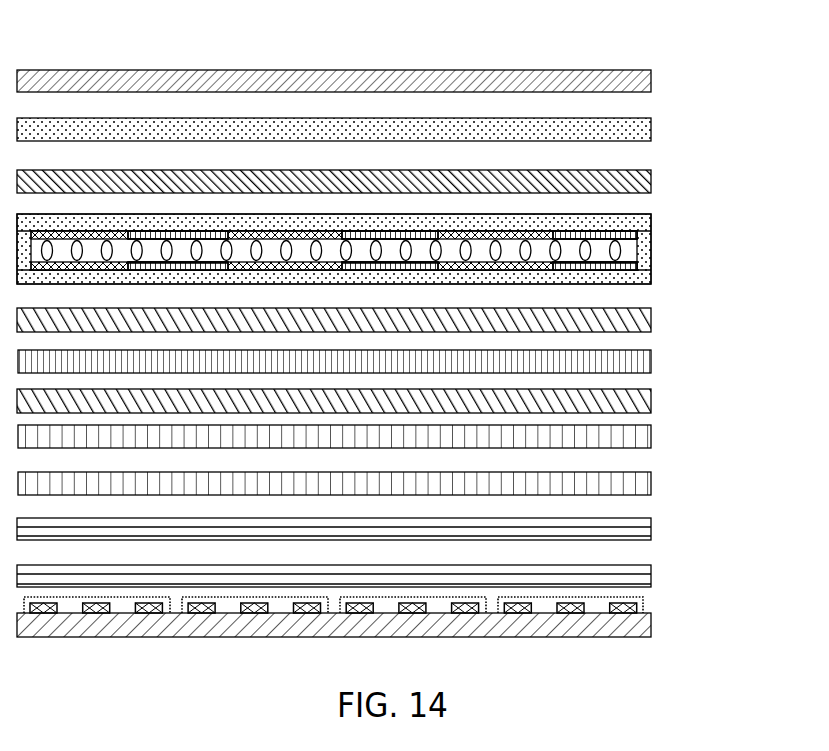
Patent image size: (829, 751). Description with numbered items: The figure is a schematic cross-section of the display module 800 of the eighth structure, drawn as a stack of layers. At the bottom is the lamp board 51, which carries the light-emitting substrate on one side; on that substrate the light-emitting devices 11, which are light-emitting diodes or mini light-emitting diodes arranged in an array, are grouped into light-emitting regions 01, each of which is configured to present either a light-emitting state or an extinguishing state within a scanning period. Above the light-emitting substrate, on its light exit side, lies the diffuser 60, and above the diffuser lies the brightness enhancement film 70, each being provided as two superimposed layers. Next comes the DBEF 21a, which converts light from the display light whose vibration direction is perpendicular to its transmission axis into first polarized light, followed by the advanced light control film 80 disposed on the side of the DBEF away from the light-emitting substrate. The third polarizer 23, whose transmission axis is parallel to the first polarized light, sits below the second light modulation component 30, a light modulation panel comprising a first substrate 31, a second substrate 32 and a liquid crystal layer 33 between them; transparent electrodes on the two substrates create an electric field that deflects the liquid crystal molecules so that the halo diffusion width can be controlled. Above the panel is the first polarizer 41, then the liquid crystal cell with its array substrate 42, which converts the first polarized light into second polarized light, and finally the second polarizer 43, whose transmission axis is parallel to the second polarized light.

The display module 800 is at (82, 50).
The second polarizer 43 is at (643, 87).
The array substrate 42 is at (643, 137).
The first polarizer 41 is at (643, 187).
The second light modulation component 30 is at (384, 250).
The second substrate 32 is at (643, 234).
The liquid crystal layer 33 is at (617, 249).
The first substrate 31 is at (643, 279).
The third polarizer 23 is at (643, 326).
The advanced light control film 80 is at (643, 371).
The DBEF 21a is at (643, 408).
The brightness enhancement film 70 is at (643, 443).
The diffuser 60 is at (643, 535).
The light-emitting region 01 is at (641, 597).
The light-emitting device 11 is at (637, 607).
The lamp board 51 is at (643, 626).